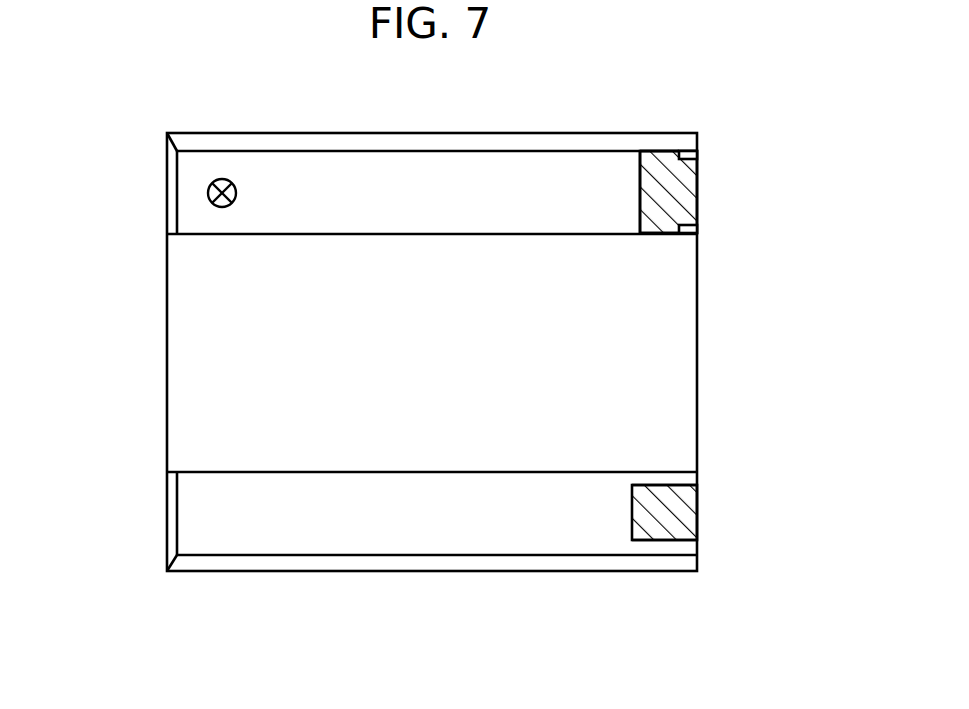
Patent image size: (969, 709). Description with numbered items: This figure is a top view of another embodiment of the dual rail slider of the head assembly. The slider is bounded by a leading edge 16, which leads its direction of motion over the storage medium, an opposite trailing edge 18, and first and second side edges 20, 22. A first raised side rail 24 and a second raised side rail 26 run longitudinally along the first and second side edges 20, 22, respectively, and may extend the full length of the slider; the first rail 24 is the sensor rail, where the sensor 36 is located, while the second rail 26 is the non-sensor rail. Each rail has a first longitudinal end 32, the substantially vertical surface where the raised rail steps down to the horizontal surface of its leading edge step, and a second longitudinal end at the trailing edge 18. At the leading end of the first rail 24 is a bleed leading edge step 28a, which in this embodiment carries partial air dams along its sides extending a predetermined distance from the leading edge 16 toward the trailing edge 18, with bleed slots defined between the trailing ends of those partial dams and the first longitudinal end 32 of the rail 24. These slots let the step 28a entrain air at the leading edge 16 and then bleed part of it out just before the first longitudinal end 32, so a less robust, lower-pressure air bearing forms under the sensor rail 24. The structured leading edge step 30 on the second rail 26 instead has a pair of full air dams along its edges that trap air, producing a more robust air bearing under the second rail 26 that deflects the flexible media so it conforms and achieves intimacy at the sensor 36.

The leading edge 16 is at (697, 355).
The trailing edge 18 is at (167, 386).
The first side edge 20 is at (478, 133).
The second side edge 22 is at (342, 572).
The first raised side rail 24 is at (327, 187).
The second raised side rail 26 is at (472, 530).
The bleed leading edge step 28a is at (677, 186).
The structured leading edge step 30 is at (690, 496).
The first longitudinal end 32 is at (648, 232).
The sensor 36 is at (208, 193).